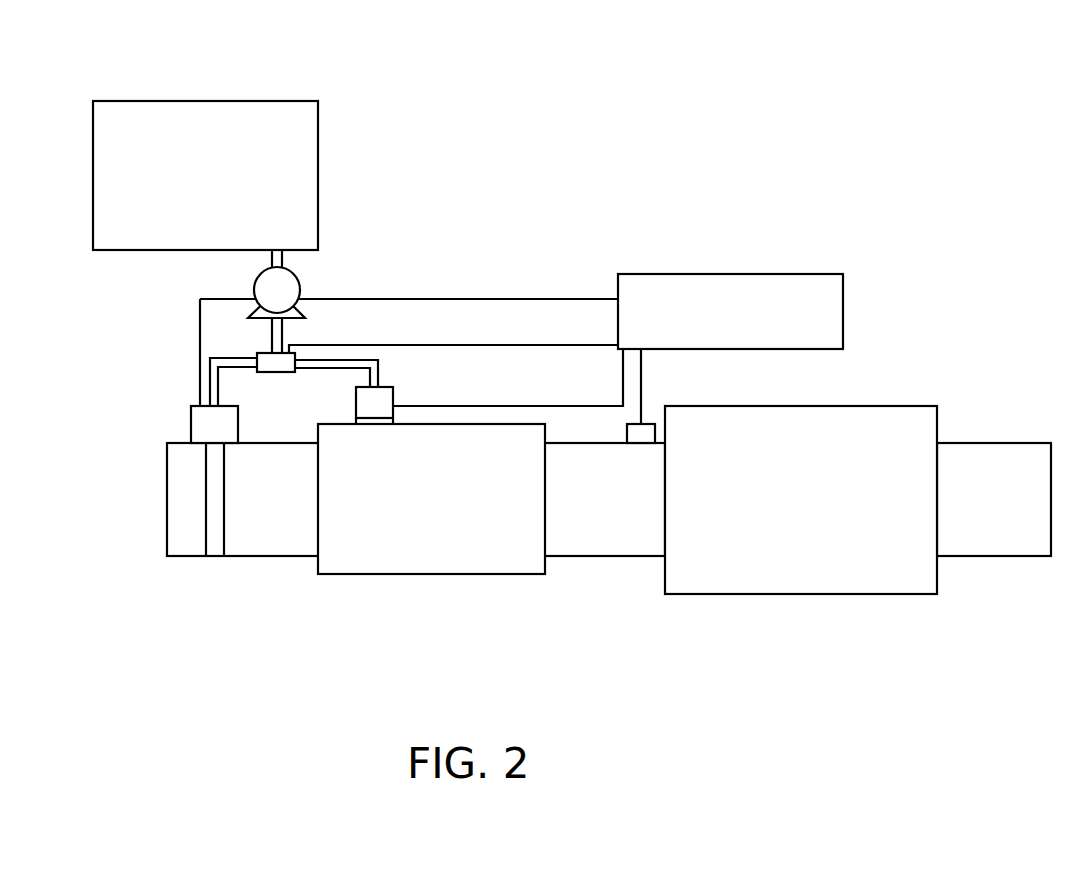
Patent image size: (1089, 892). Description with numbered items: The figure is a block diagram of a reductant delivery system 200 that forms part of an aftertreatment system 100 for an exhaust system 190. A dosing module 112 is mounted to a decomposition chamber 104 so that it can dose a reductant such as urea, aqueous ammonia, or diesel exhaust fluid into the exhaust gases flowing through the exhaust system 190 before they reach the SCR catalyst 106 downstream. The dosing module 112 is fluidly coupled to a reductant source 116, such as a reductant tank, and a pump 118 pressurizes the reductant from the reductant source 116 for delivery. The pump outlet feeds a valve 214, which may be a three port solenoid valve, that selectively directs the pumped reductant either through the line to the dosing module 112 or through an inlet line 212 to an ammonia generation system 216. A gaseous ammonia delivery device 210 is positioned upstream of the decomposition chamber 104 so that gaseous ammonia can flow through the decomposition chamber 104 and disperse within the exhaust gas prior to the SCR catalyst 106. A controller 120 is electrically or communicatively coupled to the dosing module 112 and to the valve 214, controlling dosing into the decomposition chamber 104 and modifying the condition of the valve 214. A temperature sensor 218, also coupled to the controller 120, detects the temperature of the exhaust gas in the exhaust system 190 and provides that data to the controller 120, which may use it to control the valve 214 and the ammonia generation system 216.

The aftertreatment system 100 is at (888, 348).
The decomposition chamber 104 is at (530, 423).
The SCR catalyst 106 is at (812, 595).
The dosing module 112 is at (394, 396).
The reductant source 116 is at (272, 100).
The pump 118 is at (254, 290).
The controller 120 is at (713, 273).
The exhaust system 190 is at (312, 650).
The reductant delivery system 200 is at (495, 327).
The gaseous ammonia delivery device 210 is at (213, 557).
The inlet line 212 is at (210, 380).
The valve 214 is at (292, 373).
The ammonia generation system 216 is at (191, 422).
The temperature sensor 218 is at (636, 445).